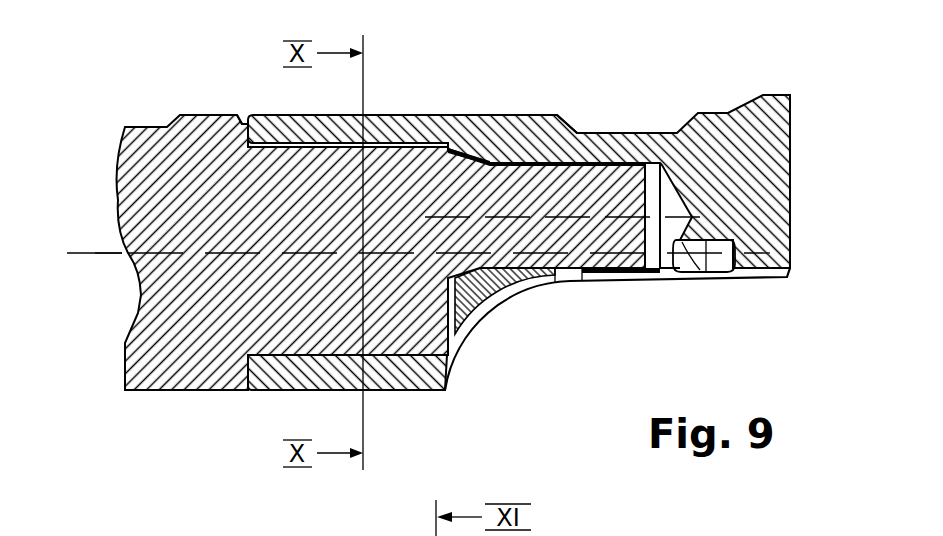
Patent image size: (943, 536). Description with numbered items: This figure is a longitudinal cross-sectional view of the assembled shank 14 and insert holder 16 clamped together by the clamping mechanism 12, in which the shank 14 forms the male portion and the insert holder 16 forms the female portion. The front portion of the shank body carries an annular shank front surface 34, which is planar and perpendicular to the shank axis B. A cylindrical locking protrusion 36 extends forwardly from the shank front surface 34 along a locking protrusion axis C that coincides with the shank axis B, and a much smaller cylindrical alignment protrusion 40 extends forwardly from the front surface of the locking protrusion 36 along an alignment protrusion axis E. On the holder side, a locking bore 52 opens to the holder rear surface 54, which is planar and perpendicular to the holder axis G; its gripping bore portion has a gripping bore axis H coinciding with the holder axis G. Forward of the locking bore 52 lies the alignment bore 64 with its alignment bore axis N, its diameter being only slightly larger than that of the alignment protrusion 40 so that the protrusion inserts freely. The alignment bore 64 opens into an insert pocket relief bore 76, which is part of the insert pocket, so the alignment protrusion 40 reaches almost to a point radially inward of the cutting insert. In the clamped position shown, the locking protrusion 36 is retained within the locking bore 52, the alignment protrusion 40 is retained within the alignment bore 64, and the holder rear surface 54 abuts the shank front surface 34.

The clamping mechanism 12 is at (441, 370).
The shank 14 is at (190, 332).
The insert holder 16 is at (753, 125).
The shank front surface 34 is at (250, 123).
The locking protrusion 36 is at (412, 158).
The alignment protrusion 40 is at (525, 140).
The locking bore 52 is at (422, 150).
The holder rear surface 54 is at (243, 127).
The alignment bore 64 is at (578, 172).
The insert pocket relief bore 76 is at (680, 263).
The shank axis B is at (87, 253).
The locking protrusion axis C is at (107, 253).
The alignment protrusion axis E is at (618, 270).
The holder axis G is at (745, 252).
The gripping bore axis H is at (768, 250).
The alignment bore axis N is at (557, 272).